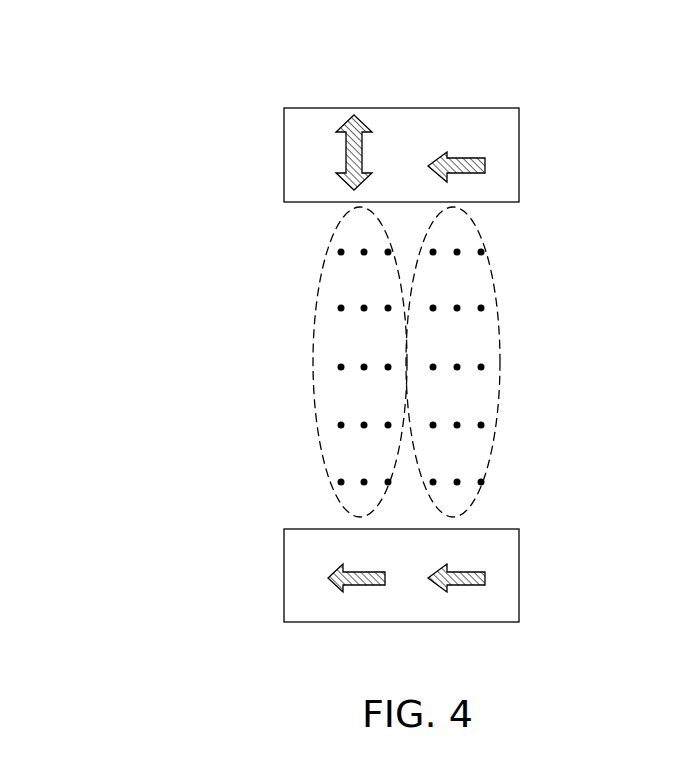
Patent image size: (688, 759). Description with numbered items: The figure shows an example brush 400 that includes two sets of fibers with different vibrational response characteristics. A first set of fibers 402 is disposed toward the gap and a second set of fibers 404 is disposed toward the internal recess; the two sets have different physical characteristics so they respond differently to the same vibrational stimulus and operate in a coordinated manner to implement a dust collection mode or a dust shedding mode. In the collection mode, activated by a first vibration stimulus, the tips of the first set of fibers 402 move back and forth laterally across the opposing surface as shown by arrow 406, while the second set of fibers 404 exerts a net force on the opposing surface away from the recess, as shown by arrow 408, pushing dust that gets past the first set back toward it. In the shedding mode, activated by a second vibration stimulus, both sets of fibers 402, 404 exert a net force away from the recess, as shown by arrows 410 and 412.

The brush 400 is at (118, 96).
The first set of fibers 402 is at (322, 278).
The second set of fibers 404 is at (492, 278).
The arrow 406 is at (346, 123).
The arrow 408 is at (462, 152).
The arrow 410 is at (363, 588).
The arrow 412 is at (465, 588).